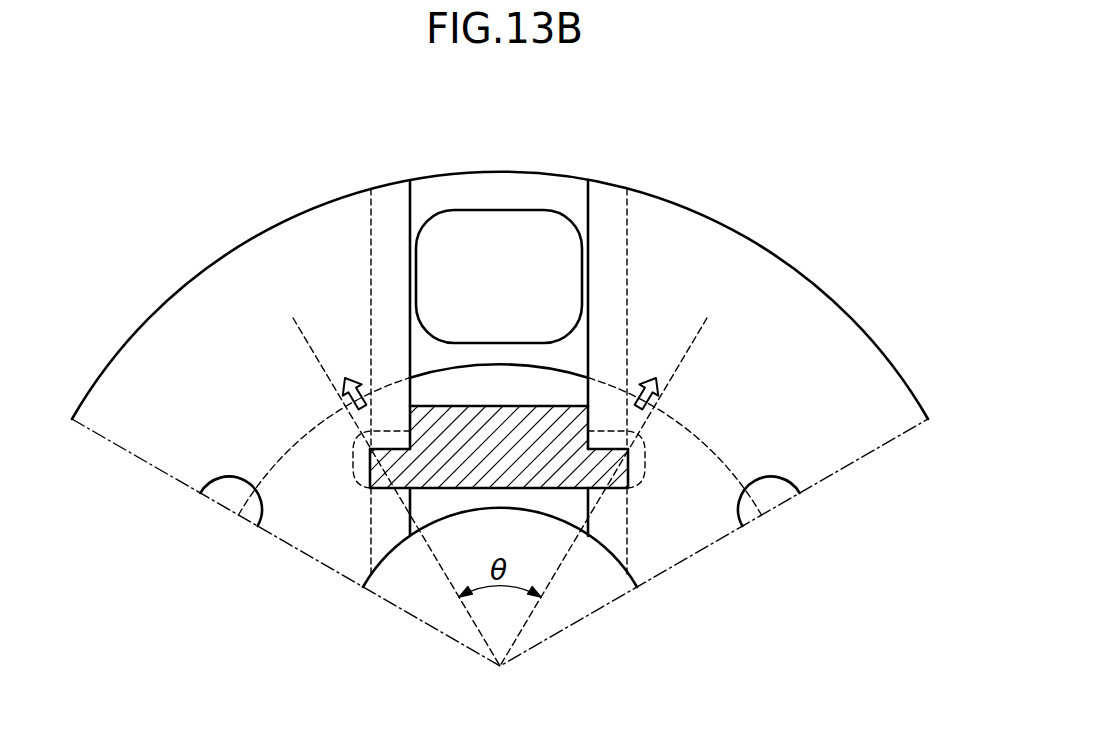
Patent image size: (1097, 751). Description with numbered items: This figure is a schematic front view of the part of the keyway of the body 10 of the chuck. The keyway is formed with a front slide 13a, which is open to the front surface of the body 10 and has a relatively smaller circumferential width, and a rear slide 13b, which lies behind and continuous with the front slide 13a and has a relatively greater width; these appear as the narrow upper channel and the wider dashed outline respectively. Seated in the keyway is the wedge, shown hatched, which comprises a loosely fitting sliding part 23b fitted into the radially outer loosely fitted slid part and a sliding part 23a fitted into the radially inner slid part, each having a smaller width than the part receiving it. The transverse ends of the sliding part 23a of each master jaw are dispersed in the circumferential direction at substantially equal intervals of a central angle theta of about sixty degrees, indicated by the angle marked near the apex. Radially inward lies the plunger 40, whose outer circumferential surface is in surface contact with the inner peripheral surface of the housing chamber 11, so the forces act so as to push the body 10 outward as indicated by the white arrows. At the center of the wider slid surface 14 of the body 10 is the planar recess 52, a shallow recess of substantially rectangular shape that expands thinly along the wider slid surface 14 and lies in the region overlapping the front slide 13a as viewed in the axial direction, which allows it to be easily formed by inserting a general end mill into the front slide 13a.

The body 10 is at (703, 245).
The housing chamber 11 is at (306, 433).
The front slide 13a is at (419, 198).
The rear slide 13b is at (627, 220).
The wider slid surface 14 is at (466, 193).
The planar recess 52 is at (522, 223).
The sliding part 23a is at (617, 467).
The loosely fitting sliding part 23b is at (528, 412).
The plunger 40 is at (298, 520).